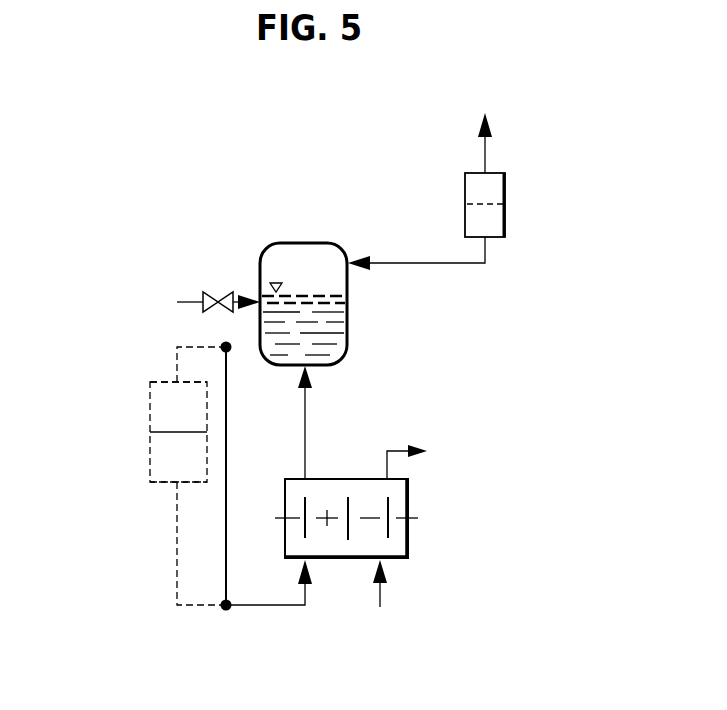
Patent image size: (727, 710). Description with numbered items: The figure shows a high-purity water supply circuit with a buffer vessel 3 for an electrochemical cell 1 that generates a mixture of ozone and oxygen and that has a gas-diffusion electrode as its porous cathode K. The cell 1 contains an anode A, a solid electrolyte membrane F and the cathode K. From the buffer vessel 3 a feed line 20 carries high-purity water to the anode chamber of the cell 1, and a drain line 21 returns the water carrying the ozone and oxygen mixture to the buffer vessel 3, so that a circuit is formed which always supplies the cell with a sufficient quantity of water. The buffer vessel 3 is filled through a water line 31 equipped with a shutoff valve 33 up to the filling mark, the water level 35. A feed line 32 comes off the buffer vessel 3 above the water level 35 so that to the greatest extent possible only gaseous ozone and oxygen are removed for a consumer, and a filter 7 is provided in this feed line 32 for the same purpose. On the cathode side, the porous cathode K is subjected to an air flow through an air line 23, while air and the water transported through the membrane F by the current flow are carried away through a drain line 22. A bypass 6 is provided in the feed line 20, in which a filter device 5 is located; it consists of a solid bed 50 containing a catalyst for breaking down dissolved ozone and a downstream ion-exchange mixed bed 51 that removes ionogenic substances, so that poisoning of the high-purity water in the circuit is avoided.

The electrochemical cell 1 is at (424, 527).
The buffer vessel 3 is at (354, 322).
The filter device 5 is at (136, 436).
The bypass 6 is at (175, 572).
The filter 7 is at (516, 188).
The feed line 20 is at (263, 608).
The drain line 21 is at (302, 441).
The drain line 22 is at (392, 466).
The air line 23 is at (383, 591).
The water line 31 is at (196, 300).
The feed line 32 is at (442, 266).
The shutoff valve 33 is at (216, 293).
The water level 35 is at (290, 286).
The solid bed 50 is at (166, 408).
The ion-exchange mixed bed 51 is at (166, 473).
The anode A is at (308, 526).
The solid electrolyte membrane F is at (353, 504).
The cathode K is at (390, 533).